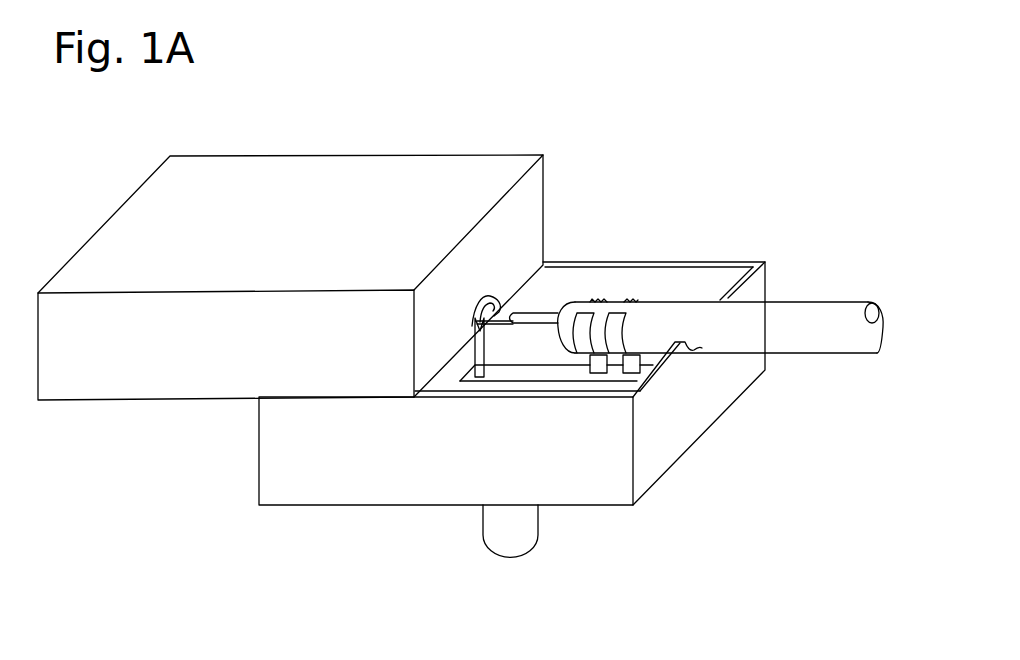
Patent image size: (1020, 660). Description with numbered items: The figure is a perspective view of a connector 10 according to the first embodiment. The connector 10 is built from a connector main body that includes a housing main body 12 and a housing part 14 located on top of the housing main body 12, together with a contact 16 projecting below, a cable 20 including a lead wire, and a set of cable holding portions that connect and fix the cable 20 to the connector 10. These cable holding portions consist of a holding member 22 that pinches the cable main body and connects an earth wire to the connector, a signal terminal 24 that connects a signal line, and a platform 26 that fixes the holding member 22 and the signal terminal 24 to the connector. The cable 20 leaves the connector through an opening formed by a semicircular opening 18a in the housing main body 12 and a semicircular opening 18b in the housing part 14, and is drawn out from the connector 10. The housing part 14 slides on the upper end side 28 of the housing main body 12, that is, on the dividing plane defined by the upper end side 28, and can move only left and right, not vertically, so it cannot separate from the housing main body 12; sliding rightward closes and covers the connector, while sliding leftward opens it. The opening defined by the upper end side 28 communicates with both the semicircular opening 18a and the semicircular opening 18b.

The connector 10 is at (428, 130).
The housing main body 12 is at (307, 488).
The housing part 14 is at (213, 158).
The contact 16 is at (510, 537).
The semicircular opening 18a is at (702, 348).
The semicircular opening 18b is at (500, 310).
The cable 20 is at (820, 312).
The holding member 22 is at (637, 300).
The signal terminal 24 is at (473, 337).
The platform 26 is at (565, 365).
The upper end side 28 is at (705, 262).